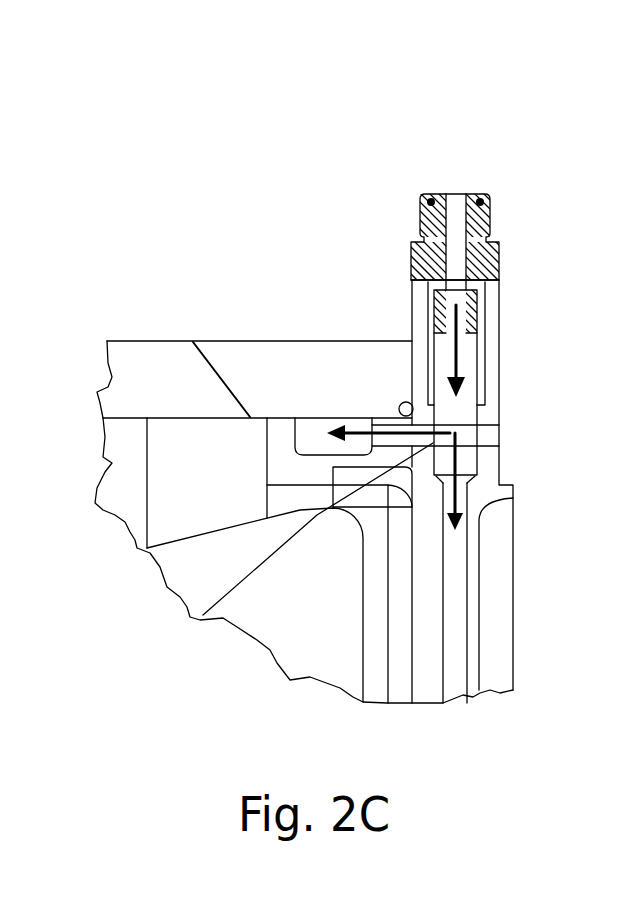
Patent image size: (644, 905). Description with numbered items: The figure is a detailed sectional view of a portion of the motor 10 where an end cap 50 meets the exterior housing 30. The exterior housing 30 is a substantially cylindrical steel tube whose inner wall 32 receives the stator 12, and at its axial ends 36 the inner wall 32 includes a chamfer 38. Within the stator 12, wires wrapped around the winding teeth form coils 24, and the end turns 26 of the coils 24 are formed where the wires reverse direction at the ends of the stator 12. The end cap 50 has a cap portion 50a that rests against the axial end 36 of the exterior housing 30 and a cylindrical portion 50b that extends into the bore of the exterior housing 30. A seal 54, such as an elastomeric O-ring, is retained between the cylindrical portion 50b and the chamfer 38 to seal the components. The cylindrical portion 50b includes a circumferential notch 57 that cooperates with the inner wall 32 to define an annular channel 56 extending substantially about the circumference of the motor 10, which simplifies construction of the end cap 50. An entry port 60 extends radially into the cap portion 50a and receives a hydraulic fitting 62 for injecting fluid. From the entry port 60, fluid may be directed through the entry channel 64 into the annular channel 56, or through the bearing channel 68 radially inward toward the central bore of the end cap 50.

The motor 10 is at (548, 145).
The stator 12 is at (93, 516).
The coils 24 is at (290, 625).
The end turns 26 is at (381, 695).
The exterior housing 30 is at (152, 365).
The inner wall 32 is at (173, 420).
The axial ends 36 is at (333, 335).
The chamfer 38 is at (402, 402).
The end cap 50 is at (490, 475).
The cap portion 50a is at (492, 390).
The cylindrical portion 50b is at (283, 432).
The seal 54 is at (395, 413).
The annular channel 56 is at (313, 437).
The circumferential notch 57 is at (337, 450).
The entry port 60 is at (459, 183).
The hydraulic fitting 62 is at (490, 213).
The entry channel 64 is at (432, 431).
The bearing channel 68 is at (457, 591).